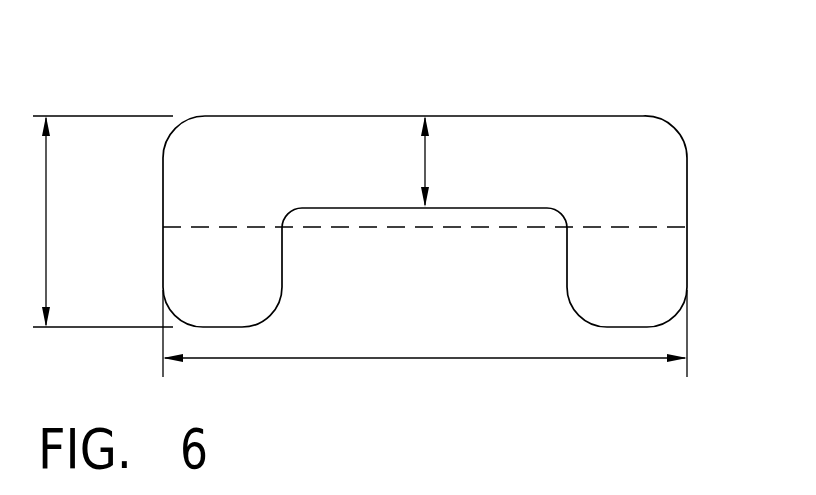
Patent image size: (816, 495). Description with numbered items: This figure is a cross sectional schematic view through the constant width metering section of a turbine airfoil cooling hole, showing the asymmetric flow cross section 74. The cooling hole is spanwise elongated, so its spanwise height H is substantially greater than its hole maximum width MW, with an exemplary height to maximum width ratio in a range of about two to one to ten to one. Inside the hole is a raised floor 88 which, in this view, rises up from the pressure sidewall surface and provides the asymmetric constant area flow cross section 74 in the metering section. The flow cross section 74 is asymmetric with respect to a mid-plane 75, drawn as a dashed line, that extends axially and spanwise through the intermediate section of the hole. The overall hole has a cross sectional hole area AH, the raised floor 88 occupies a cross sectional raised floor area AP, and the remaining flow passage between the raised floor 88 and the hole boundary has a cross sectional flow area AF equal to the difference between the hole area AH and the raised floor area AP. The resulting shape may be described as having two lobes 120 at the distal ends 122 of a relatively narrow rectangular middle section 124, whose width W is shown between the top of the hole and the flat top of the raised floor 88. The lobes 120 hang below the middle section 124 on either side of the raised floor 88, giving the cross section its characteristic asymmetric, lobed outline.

The asymmetric flow cross section 74 is at (544, 162).
The mid-plane 75 is at (452, 228).
The raised floor 88 is at (355, 207).
The lobes 120 is at (200, 172).
The distal ends 122 is at (265, 147).
The middle section 124 is at (382, 116).
The cross sectional flow area AF is at (332, 162).
The cross sectional hole area AH is at (370, 175).
The width W is at (427, 160).
The hole maximum width MW is at (47, 222).
The spanwise height H is at (422, 359).
The cross sectional raised floor area AP is at (430, 273).